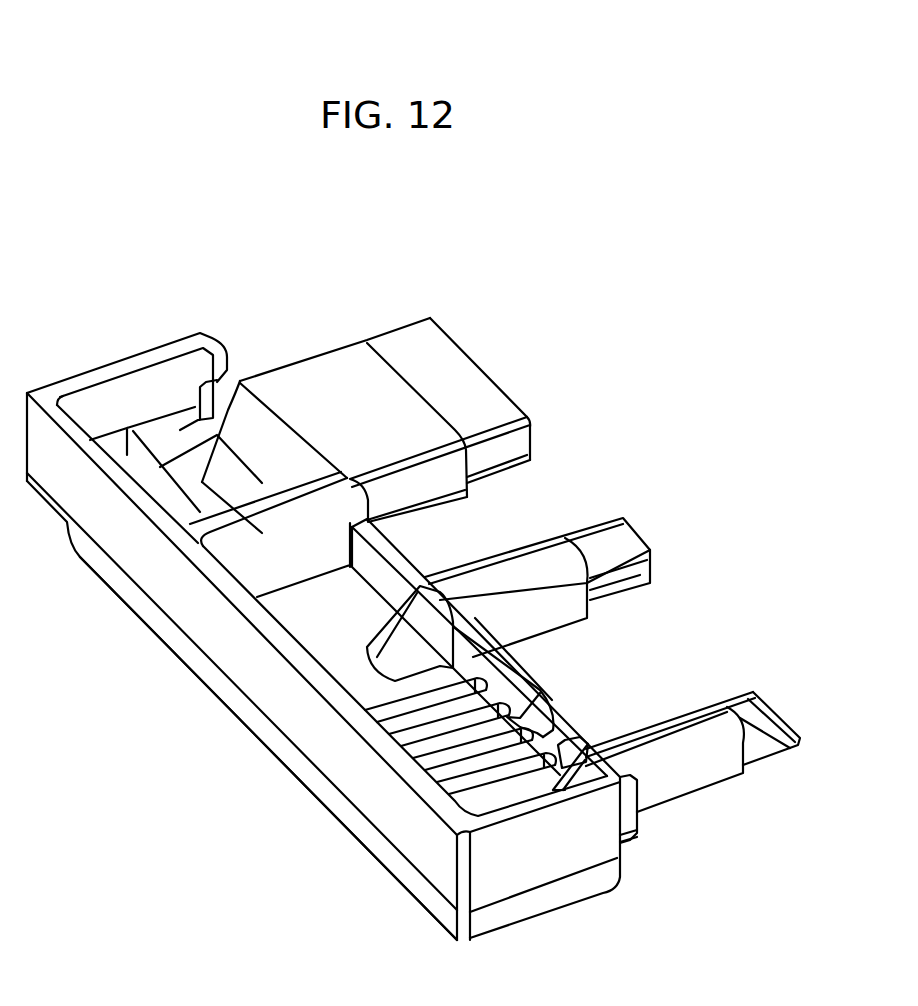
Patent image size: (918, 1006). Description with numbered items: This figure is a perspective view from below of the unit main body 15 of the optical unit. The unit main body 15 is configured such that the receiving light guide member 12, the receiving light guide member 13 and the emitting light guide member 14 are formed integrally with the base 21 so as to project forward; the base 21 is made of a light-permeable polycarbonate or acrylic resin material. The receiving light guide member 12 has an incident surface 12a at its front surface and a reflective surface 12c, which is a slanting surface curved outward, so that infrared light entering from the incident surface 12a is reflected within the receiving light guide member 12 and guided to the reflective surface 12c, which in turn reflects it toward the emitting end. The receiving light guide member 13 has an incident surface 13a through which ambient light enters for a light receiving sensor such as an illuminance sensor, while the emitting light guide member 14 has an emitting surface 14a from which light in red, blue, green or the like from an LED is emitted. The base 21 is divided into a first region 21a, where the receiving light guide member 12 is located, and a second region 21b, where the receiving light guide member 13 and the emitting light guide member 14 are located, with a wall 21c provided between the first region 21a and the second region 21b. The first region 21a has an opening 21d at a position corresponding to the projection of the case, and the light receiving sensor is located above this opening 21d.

The receiving light guide member 12 is at (337, 390).
The incident surface 12a is at (482, 363).
The reflective surface 12c is at (245, 407).
The receiving light guide member 13 is at (617, 575).
The incident surface 13a is at (637, 535).
The emitting light guide member 14 is at (690, 778).
The emitting surface 14a is at (737, 713).
The unit main body 15 is at (338, 843).
The base 21 is at (105, 518).
The first region 21a is at (127, 457).
The second region 21b is at (315, 622).
The wall 21c is at (233, 555).
The opening 21d is at (178, 467).